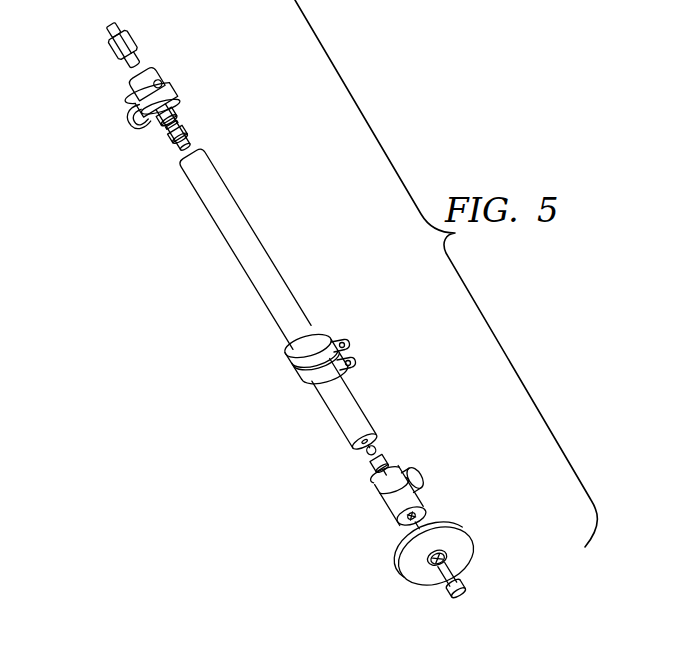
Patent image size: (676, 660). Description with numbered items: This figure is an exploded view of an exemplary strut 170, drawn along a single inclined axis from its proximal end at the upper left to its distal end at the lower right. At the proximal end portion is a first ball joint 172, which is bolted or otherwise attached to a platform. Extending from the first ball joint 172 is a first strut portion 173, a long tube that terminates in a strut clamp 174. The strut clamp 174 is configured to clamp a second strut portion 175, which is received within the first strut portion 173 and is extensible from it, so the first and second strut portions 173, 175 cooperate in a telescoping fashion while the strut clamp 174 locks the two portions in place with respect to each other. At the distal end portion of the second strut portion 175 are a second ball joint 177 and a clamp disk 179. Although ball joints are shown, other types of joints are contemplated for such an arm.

The strut 170 is at (108, 287).
The first ball joint 172 is at (167, 88).
The first strut portion 173 is at (272, 257).
The strut clamp 174 is at (290, 365).
The second strut portion 175 is at (358, 402).
The second ball joint 177 is at (422, 500).
The clamp disk 179 is at (467, 537).